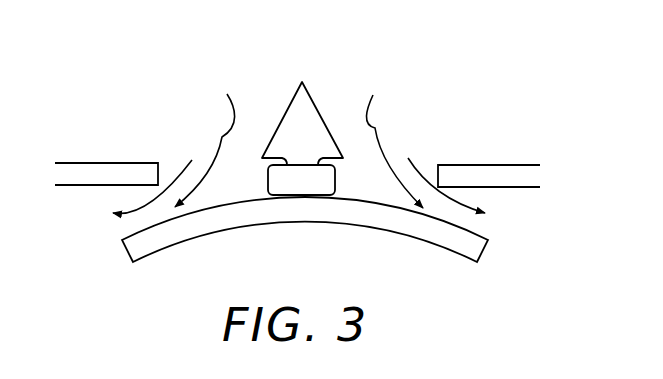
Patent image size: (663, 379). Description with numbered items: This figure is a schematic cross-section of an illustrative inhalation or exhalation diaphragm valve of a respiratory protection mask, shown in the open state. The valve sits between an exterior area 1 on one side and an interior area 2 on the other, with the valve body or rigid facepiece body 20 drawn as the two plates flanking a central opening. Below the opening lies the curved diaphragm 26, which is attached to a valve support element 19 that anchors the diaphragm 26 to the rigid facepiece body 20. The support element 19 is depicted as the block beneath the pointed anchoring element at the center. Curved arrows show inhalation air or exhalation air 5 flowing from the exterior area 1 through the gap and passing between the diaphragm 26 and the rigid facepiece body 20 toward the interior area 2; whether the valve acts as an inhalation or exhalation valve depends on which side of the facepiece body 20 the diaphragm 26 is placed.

The exterior area 1 is at (175, 128).
The interior area 2 is at (196, 291).
The inhalation air or exhalation air 5 is at (299, 141).
The valve support element 19 is at (270, 168).
The rigid facepiece body 20 is at (95, 172).
The diaphragm 26 is at (372, 230).